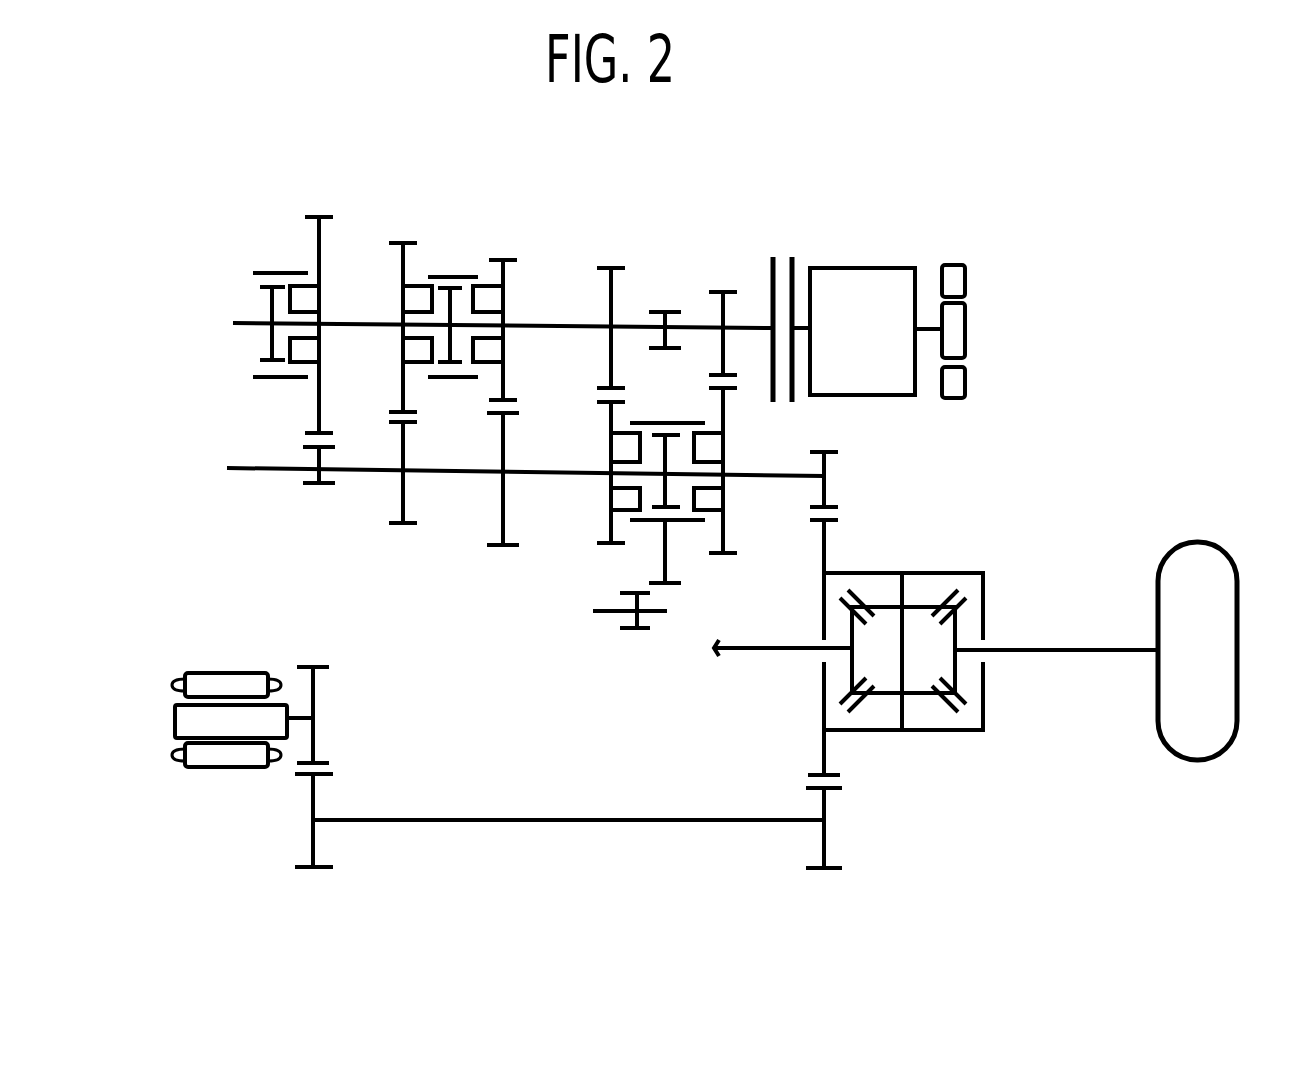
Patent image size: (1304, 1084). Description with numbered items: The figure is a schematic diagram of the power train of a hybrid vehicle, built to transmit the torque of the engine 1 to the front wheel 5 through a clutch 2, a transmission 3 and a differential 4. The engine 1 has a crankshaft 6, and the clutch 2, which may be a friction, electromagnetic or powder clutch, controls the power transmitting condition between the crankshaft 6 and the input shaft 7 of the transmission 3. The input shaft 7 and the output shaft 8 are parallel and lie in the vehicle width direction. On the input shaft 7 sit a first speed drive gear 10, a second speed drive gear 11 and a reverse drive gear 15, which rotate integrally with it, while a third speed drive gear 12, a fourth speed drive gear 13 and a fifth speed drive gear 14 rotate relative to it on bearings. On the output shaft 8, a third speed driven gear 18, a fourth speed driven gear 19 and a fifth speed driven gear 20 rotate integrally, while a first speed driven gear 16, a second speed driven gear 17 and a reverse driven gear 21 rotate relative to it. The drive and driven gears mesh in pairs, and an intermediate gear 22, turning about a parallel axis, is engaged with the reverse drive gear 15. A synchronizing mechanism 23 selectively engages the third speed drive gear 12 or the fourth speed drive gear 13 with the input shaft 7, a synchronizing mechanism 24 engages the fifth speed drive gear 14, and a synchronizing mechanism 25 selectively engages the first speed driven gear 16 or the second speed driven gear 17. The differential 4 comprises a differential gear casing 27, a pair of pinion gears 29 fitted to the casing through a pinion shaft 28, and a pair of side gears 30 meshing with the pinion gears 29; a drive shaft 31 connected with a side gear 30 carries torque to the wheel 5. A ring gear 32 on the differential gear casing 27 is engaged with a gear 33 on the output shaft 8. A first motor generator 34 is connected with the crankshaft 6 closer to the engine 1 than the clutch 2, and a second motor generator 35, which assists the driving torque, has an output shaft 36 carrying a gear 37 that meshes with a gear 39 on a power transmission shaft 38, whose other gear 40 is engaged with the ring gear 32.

The engine 1 is at (862, 268).
The clutch 2 is at (797, 233).
The transmission 3 is at (198, 356).
The differential 4 is at (992, 583).
The wheel 5 is at (1222, 597).
The crankshaft 6 is at (926, 332).
The input shaft 7 is at (240, 322).
The output shaft 8 is at (250, 470).
The first speed drive gear 10 is at (723, 292).
The second speed drive gear 11 is at (611, 268).
The third speed drive gear 12 is at (503, 260).
The fourth speed drive gear 13 is at (403, 243).
The fifth speed drive gear 14 is at (321, 217).
The reverse drive gear 15 is at (665, 312).
The first speed driven gear 16 is at (727, 555).
The second speed driven gear 17 is at (605, 545).
The third speed driven gear 18 is at (500, 547).
The fourth speed driven gear 19 is at (402, 525).
The fifth speed driven gear 20 is at (315, 485).
The reverse driven gear 21 is at (668, 585).
The intermediate gear 22 is at (637, 630).
The synchronizing mechanism 23 is at (450, 385).
The synchronizing mechanism 24 is at (262, 383).
The synchronizing mechanism 25 is at (632, 553).
The differential gear casing 27 is at (965, 732).
The pinion shaft 28 is at (905, 712).
The pinion gears 29 is at (850, 700).
The side gears 30 is at (840, 665).
The drive shaft 31 is at (1070, 648).
The ring gear 32 is at (836, 518).
The gear 33 is at (830, 452).
The first motor generator 34 is at (975, 313).
The second motor generator 35 is at (212, 773).
The output shaft 36 is at (300, 722).
The gear 37 is at (313, 667).
The power transmission shaft 38 is at (565, 822).
The gear 39 is at (313, 870).
The gear 40 is at (824, 870).